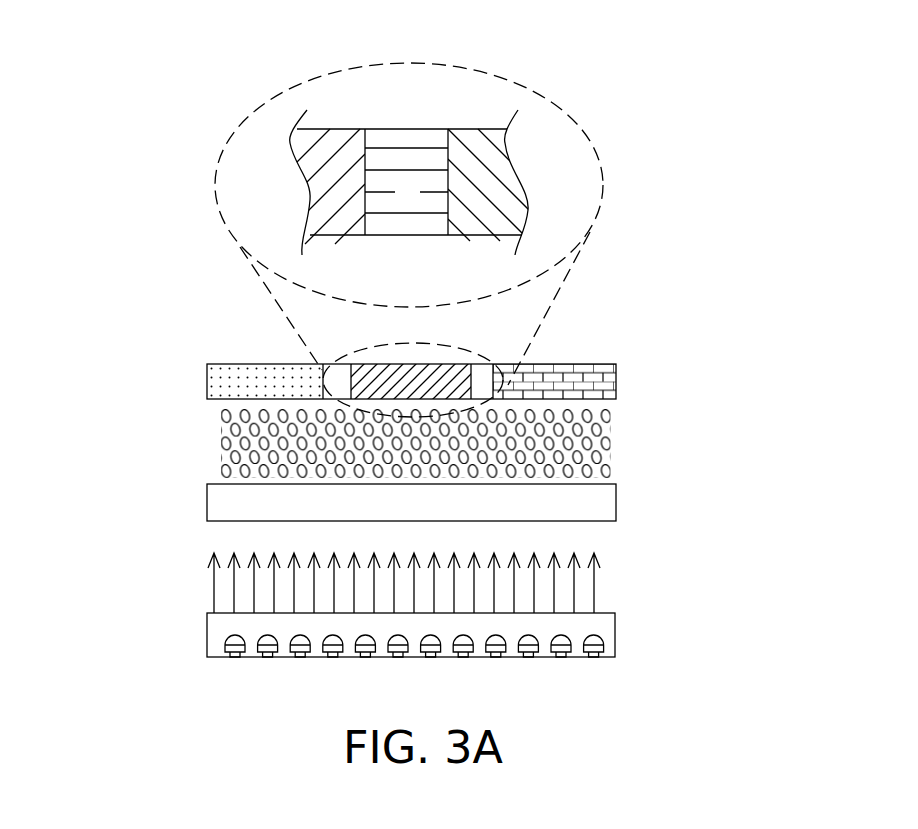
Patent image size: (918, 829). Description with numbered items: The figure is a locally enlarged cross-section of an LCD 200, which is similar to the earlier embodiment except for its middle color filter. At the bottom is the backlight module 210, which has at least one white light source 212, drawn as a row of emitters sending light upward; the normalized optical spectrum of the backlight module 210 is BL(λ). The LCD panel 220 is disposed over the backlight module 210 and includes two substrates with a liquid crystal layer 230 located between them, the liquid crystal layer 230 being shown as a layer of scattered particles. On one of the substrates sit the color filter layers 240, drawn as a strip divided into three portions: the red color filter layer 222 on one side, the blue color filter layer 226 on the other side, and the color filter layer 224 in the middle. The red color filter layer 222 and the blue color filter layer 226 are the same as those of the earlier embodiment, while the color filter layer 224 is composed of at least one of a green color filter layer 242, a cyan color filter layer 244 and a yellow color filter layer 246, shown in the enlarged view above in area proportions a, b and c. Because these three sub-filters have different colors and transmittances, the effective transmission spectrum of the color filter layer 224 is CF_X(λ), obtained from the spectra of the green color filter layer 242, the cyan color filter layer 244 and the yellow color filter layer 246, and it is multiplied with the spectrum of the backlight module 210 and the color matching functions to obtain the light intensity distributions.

The LCD 200 is at (440, 500).
The backlight module 210 is at (437, 637).
The white light source 212 is at (226, 648).
The LCD panel 220 is at (440, 400).
The red color filter layer 222 is at (562, 372).
The color filter layer 224 is at (418, 378).
The blue color filter layer 226 is at (265, 372).
The liquid crystal layer 230 is at (198, 405).
The color filter layers 240 is at (440, 339).
The green color filter layer 242 is at (312, 136).
The cyan color filter layer 244 is at (402, 136).
The yellow color filter layer 246 is at (482, 136).